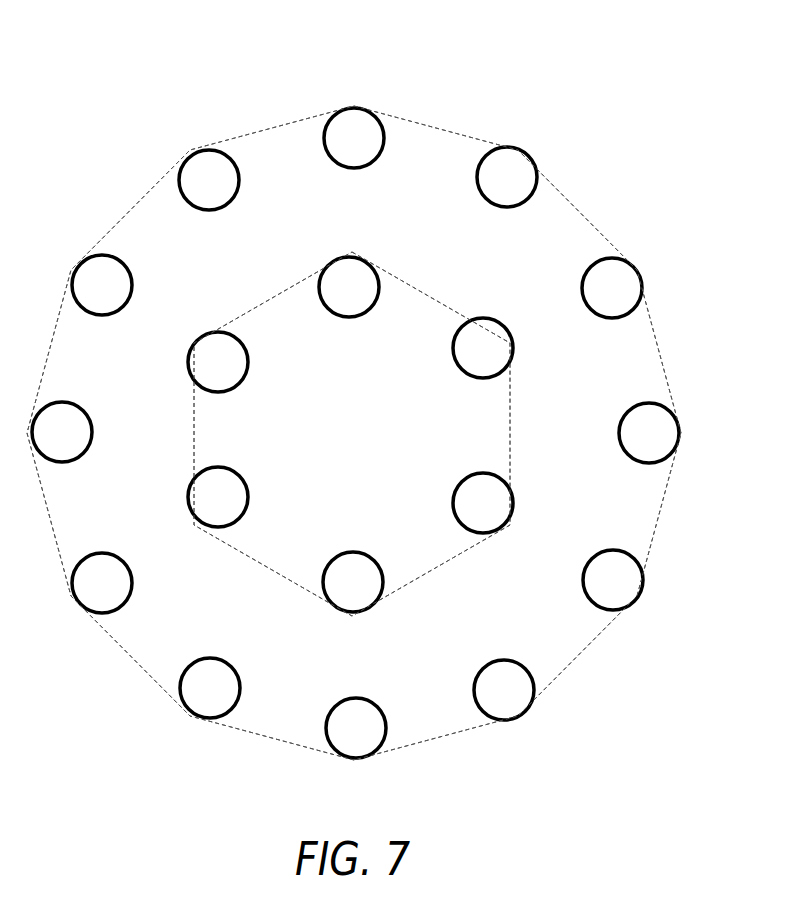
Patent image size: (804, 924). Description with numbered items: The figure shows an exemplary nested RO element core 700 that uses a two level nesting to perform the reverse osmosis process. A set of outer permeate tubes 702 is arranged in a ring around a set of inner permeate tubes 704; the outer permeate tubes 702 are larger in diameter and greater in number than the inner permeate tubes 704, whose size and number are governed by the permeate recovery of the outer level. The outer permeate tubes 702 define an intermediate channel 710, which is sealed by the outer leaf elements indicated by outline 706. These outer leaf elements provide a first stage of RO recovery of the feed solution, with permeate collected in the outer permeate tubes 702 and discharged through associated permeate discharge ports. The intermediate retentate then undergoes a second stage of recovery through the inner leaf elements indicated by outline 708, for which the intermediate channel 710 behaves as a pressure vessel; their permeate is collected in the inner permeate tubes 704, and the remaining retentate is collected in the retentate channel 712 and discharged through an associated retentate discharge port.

The nested RO element core 700 is at (203, 77).
The outer permeate tubes 702 is at (510, 148).
The inner permeate tubes 704 is at (355, 257).
The outline of outer leaf elements 706 is at (662, 355).
The outline of inner leaf elements 708 is at (511, 418).
The intermediate channel 710 is at (640, 522).
The retentate channel 712 is at (415, 530).